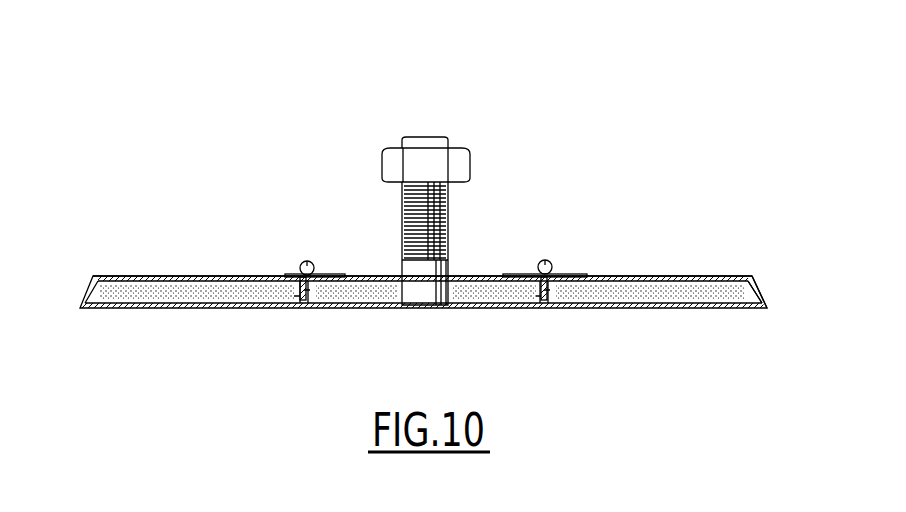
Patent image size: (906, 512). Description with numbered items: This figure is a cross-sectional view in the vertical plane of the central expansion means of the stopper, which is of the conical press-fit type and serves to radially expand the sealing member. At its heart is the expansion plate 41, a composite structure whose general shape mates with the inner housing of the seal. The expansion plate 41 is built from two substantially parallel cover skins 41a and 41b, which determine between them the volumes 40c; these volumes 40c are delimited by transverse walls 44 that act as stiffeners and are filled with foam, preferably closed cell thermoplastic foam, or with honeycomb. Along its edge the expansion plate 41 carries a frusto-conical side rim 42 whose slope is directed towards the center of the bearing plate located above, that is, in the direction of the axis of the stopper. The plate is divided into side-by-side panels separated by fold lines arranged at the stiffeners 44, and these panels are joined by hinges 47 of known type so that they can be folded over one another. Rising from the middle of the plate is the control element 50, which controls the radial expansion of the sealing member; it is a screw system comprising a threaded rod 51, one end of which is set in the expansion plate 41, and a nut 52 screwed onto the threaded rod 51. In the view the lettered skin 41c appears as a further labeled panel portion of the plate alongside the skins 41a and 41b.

The volumes 40c is at (655, 292).
The expansion plate 41 is at (707, 274).
The cover skin 41a is at (635, 270).
The cover skin 41b is at (366, 306).
The panel 41c is at (122, 292).
The frusto-conical side rim 42 is at (764, 292).
The transverse walls 44 is at (290, 301).
The hinges 47 is at (305, 261).
The control element 50 is at (424, 177).
The threaded rod 51 is at (449, 222).
The nut 52 is at (388, 162).